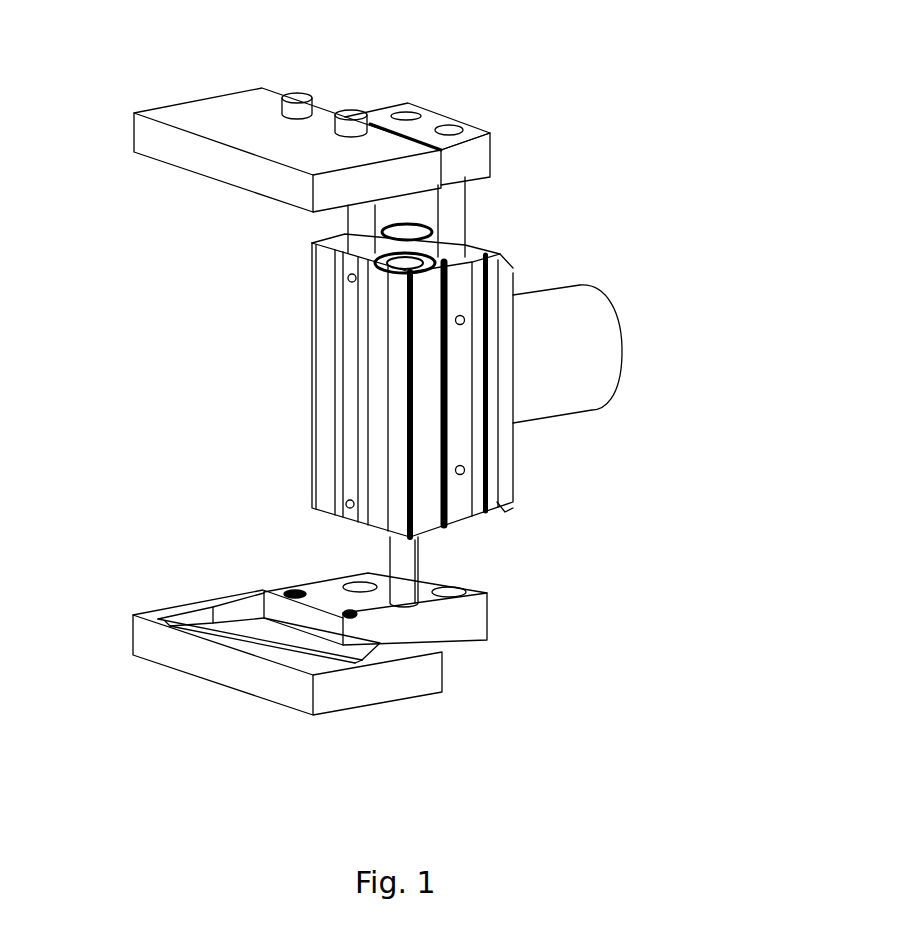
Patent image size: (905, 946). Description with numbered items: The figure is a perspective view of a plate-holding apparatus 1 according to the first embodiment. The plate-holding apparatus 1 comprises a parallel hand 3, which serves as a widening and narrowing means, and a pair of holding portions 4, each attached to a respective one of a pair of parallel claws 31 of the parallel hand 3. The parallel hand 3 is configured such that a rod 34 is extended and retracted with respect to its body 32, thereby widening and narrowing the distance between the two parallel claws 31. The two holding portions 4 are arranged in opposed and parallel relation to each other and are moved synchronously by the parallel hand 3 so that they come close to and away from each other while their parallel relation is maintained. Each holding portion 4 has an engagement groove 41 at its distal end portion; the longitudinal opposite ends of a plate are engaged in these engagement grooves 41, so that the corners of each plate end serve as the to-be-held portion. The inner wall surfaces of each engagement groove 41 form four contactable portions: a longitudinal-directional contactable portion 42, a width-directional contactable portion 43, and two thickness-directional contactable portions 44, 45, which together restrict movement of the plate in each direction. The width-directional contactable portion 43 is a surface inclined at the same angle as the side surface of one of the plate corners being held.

The plate-holding apparatus 1 is at (636, 299).
The parallel hand 3 is at (502, 252).
The parallel claw 31 is at (430, 118).
The body 32 is at (462, 437).
The rod 34 is at (453, 222).
The holding portion 4 is at (200, 117).
The engagement groove 41 is at (183, 617).
The longitudinal-directional contactable portion 42 is at (243, 637).
The width-directional contactable portion 43 is at (177, 603).
The thickness-directional contactable portion 44 is at (211, 620).
The thickness-directional contactable portion 45 is at (260, 647).